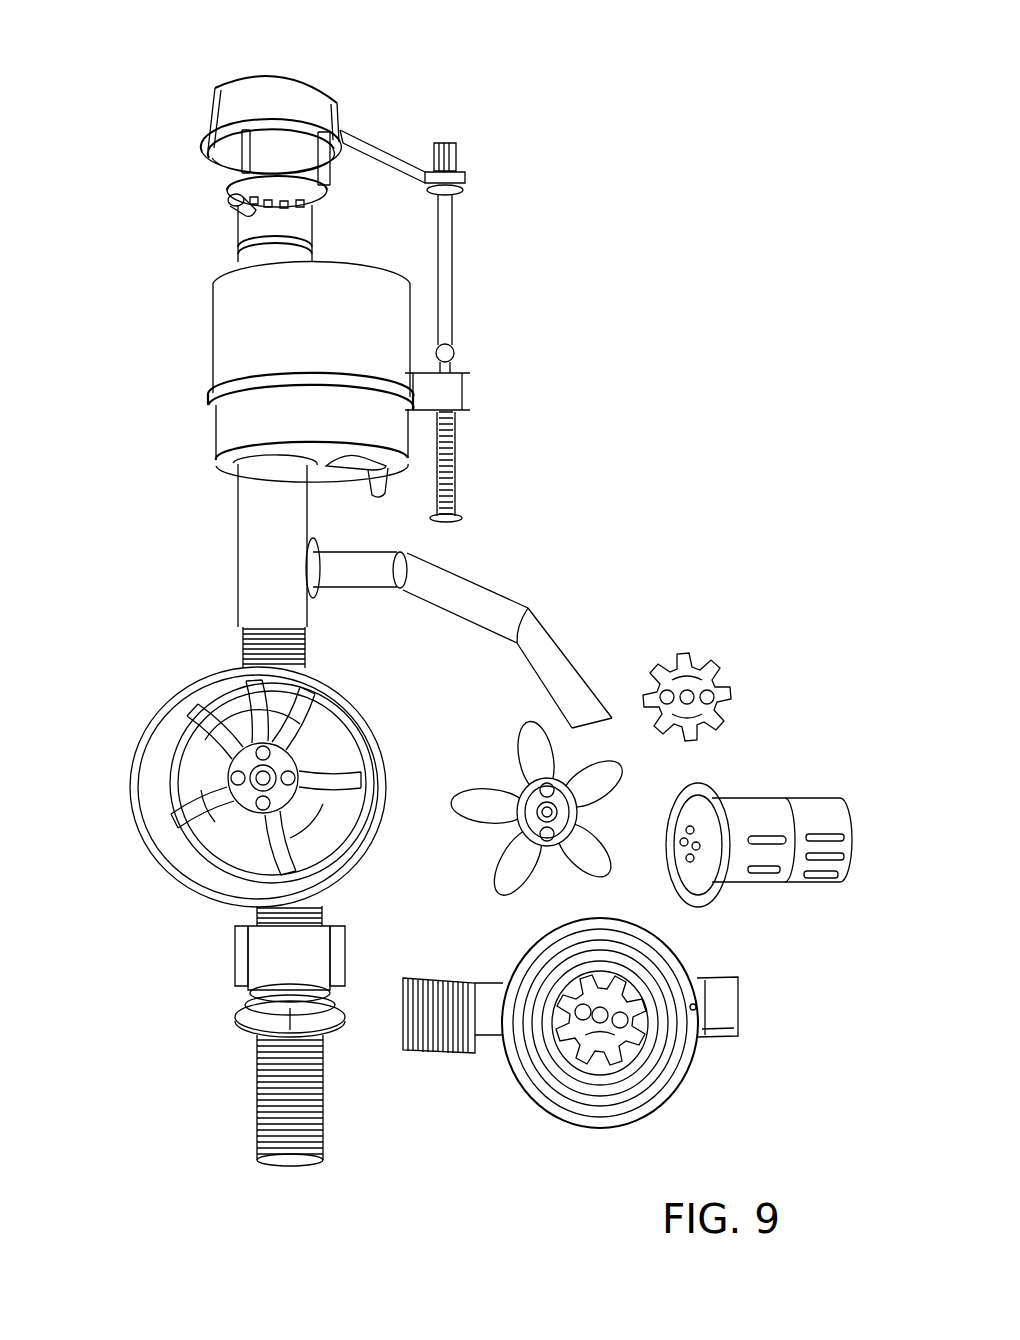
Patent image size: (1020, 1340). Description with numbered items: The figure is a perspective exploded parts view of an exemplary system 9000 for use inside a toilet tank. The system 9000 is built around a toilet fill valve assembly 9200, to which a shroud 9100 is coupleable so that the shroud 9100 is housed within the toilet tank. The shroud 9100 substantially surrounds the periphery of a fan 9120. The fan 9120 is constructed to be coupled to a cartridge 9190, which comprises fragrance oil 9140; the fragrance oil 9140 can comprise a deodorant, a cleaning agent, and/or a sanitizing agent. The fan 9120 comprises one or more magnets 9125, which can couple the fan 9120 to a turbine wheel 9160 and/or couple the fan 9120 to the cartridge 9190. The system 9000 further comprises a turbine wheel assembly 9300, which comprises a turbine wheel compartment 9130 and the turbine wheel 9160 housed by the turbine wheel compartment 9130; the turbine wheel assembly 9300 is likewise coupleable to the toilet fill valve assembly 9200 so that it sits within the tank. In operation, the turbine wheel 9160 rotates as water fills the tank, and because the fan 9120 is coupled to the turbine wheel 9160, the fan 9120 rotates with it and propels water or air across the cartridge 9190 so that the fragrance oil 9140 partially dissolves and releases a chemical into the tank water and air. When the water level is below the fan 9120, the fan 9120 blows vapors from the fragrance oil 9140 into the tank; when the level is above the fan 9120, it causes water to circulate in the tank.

The system 9000 is at (96, 51).
The toilet fill valve assembly 9200 is at (272, 108).
The shroud 9100 is at (178, 685).
The fan 9120 is at (222, 822).
The magnets 9125 is at (545, 832).
The turbine wheel 9160 is at (695, 658).
The cartridge 9190 is at (818, 802).
The fragrance oil 9140 is at (765, 842).
The turbine wheel assembly 9300 is at (690, 967).
The turbine wheel compartment 9130 is at (525, 1045).